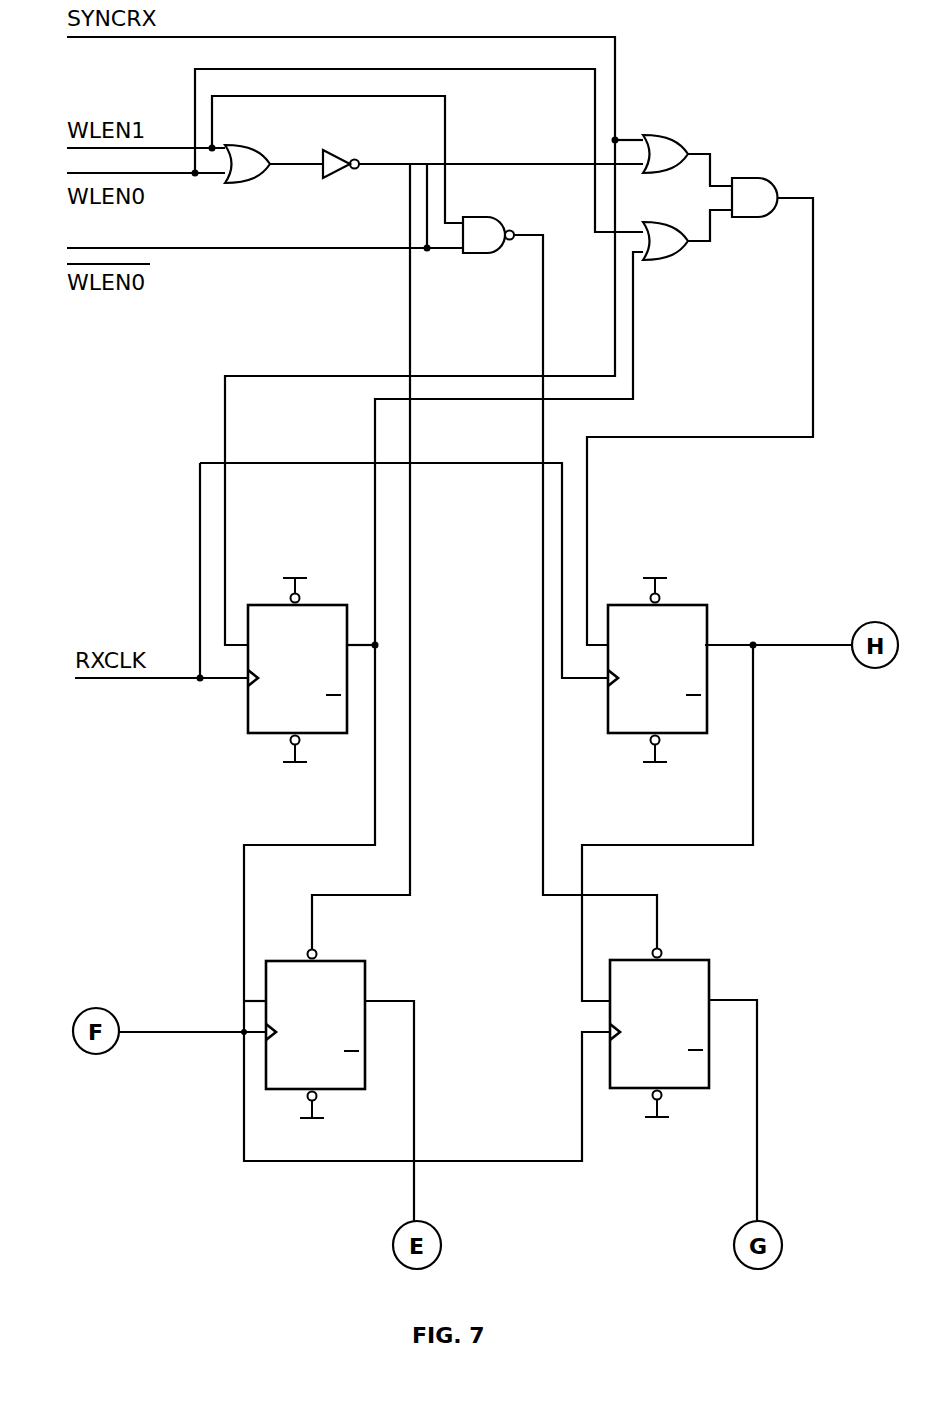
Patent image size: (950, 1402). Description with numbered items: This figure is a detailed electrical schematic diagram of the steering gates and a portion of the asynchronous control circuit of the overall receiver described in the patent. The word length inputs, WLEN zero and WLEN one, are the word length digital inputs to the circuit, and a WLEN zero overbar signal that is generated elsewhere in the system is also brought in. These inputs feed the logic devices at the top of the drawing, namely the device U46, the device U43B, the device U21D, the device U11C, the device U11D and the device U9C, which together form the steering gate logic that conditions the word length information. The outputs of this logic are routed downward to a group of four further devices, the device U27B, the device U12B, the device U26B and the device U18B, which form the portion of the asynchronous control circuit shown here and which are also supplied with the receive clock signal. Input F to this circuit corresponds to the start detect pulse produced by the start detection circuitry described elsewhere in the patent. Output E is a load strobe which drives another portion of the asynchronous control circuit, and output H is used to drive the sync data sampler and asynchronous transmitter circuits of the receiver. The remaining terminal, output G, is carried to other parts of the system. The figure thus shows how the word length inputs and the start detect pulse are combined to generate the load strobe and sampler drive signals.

The OR gate 74HCT32 U46 is at (221, 165).
The inverter 74L904 U43B is at (351, 169).
The NAND gate 74HCT00 U21D is at (510, 236).
The OR gate 74HCT32 U11C is at (680, 125).
The OR gate 74HCT32 U11D is at (698, 275).
The AND gate 74HCT08 U9C is at (782, 168).
The D flip-flop 74HCT74 U27B is at (248, 676).
The D flip-flop 74HCT74 U12B is at (702, 669).
The D flip-flop 74HCT74 U26B is at (371, 1031).
The D flip-flop 74HCT74 U18B is at (698, 1019).